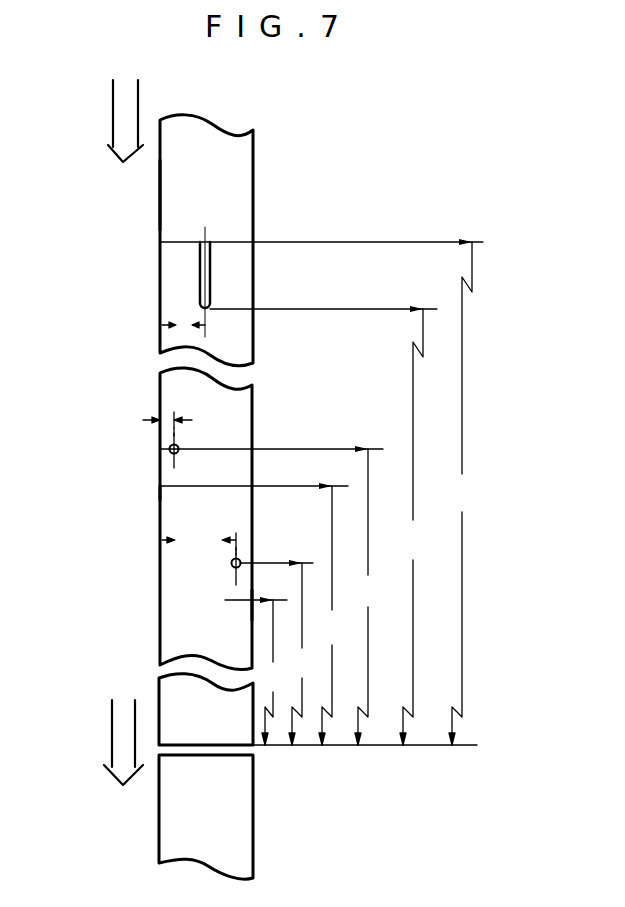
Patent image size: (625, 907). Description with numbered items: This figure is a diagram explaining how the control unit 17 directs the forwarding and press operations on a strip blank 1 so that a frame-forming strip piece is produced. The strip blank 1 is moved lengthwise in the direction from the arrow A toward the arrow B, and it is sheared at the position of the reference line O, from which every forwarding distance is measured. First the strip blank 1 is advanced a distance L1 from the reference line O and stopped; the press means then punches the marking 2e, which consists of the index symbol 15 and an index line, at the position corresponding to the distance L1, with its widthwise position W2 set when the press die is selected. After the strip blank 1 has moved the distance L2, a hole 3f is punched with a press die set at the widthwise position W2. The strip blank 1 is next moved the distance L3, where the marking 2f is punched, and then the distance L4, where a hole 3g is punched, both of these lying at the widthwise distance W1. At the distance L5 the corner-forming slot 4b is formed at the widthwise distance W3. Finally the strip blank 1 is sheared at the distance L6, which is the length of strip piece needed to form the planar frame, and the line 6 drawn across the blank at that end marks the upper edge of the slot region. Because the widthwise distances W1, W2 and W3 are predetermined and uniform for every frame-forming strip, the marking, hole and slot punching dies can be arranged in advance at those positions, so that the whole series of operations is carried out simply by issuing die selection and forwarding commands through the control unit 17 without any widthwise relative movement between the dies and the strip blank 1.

The strip blank 1 is at (166, 192).
The reference line at slot top 6 is at (180, 242).
The corner-forming slot 4b is at (200, 300).
The widthwise distance of the corner-forming slot W3 is at (185, 328).
The widthwise distance of the hole and marking W1 is at (189, 423).
The hole 3g is at (171, 451).
The control unit 17 is at (179, 497).
The marking 2f is at (166, 497).
The widthwise distance of the hole and marking W2 is at (199, 542).
The hole 3f is at (233, 565).
The index symbol 15 is at (245, 610).
The marking 2e is at (240, 611).
The reference line O is at (375, 746).
The distance L1 is at (275, 672).
The distance L2 is at (300, 654).
The distance L3 is at (330, 615).
The distance L4 is at (367, 597).
The distance L5 is at (413, 527).
The distance L6 is at (462, 493).
The arrow A is at (113, 120).
The arrow B is at (112, 716).